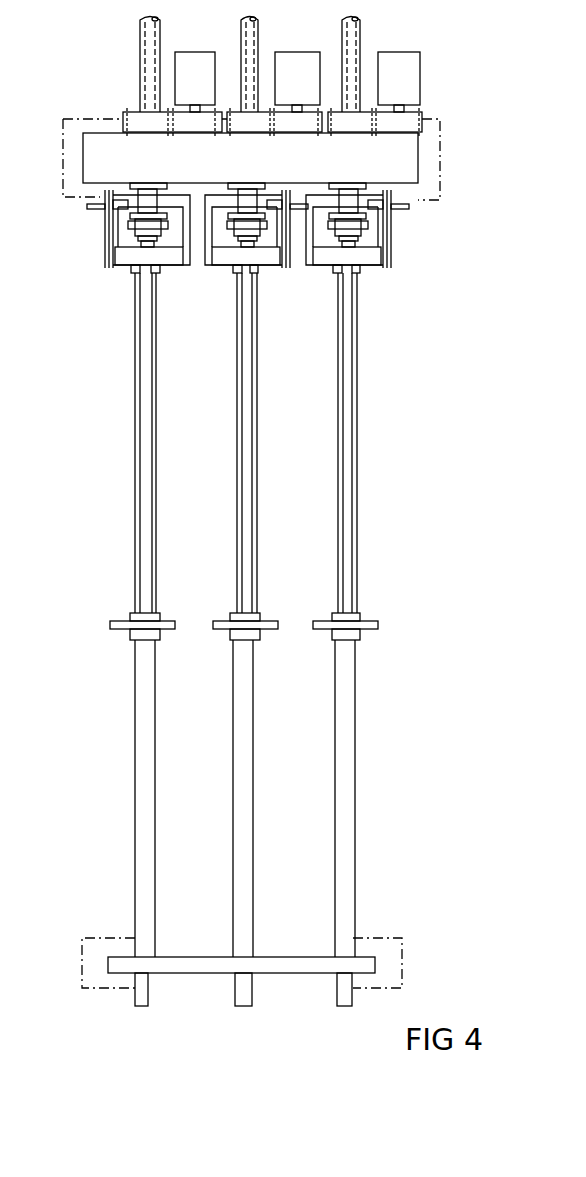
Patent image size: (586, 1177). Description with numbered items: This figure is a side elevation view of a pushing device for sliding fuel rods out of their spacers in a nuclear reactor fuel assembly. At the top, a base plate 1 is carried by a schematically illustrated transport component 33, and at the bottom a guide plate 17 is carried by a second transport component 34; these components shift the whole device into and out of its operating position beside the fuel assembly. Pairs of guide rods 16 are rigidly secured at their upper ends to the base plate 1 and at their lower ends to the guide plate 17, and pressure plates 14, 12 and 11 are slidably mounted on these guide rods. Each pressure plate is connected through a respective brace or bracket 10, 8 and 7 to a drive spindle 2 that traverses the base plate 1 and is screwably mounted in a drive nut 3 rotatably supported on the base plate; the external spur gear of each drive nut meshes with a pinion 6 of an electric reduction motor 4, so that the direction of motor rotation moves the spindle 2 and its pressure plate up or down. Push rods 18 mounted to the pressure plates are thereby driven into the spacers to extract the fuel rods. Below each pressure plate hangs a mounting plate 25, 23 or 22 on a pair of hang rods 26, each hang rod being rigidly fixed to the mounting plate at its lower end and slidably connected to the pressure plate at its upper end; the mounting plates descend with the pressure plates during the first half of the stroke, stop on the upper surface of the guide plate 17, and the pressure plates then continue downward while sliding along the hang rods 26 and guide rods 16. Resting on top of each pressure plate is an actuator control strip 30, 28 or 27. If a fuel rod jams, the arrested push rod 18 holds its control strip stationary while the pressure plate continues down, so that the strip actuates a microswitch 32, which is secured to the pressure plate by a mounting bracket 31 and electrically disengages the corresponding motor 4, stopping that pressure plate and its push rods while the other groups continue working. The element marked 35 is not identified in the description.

The base plate 1 is at (400, 153).
The drive spindle 2 is at (146, 33).
The drive nut 3 is at (138, 122).
The electric reduction motor 4 is at (194, 68).
The pinion 6 is at (205, 120).
The brace or bracket 7 is at (322, 193).
The brace or bracket 8 is at (222, 195).
The brace or bracket 10 is at (127, 195).
The pressure plate 11 is at (330, 260).
The pressure plate 12 is at (279, 266).
The pressure plate 14 is at (125, 260).
The guide rod 16 is at (150, 790).
The guide plate 17 is at (300, 965).
The push rod 18 is at (143, 1000).
The mounting plate 22 is at (380, 627).
The mounting plate 23 is at (264, 630).
The mounting plate 25 is at (112, 625).
The hang rod 26 is at (335, 470).
The actuator control plate or strip 27 is at (368, 228).
The actuator control plate or strip 28 is at (228, 236).
The actuator control plate or strip 30 is at (135, 224).
The mounting bracket 31 is at (107, 250).
The proximity switch or microswitch 32 is at (88, 209).
The transport component 33 is at (62, 130).
The transport component 34 is at (392, 957).
The piston 35 is at (160, 236).